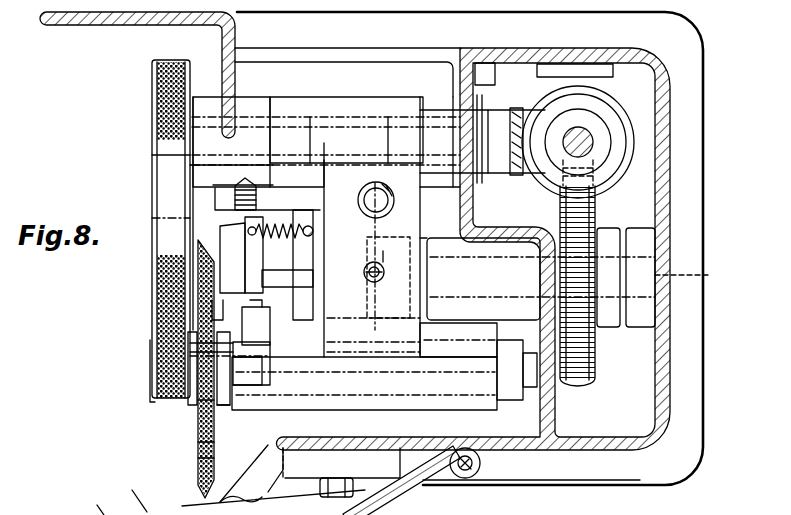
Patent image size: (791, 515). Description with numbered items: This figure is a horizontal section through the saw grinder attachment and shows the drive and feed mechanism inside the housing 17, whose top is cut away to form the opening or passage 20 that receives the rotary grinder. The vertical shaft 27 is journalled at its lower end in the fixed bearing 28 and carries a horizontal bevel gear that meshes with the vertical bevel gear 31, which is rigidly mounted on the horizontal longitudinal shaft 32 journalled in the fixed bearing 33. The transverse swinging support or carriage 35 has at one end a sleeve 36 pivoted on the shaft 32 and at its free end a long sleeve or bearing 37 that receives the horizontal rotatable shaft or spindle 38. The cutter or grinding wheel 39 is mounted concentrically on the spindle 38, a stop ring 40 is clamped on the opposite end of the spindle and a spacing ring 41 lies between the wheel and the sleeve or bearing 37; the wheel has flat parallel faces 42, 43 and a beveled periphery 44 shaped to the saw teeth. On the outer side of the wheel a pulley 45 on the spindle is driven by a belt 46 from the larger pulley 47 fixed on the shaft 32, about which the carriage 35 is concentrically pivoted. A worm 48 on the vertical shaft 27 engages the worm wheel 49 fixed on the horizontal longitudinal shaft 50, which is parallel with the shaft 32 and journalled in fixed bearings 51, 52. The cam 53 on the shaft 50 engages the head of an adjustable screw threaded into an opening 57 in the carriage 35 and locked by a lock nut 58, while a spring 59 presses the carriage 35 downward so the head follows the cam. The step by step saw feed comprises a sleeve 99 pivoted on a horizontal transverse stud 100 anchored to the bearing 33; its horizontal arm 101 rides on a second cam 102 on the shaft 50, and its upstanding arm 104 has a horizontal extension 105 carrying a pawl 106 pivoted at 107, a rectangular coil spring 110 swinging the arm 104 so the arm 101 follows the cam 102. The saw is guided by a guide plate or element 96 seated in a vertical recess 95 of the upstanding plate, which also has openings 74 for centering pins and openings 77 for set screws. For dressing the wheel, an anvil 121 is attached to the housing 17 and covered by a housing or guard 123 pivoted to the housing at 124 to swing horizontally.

The housing 17 is at (546, 61).
The opening or passage 20 is at (283, 441).
The vertical shaft 27 is at (582, 130).
The fixed bearing 28 is at (605, 77).
The vertical bevel gear 31 is at (513, 112).
The horizontal longitudinal shaft 32 is at (322, 140).
The fixed bearing 33 is at (248, 105).
The swinging support or carriage 35 is at (395, 218).
The sleeve 36 is at (297, 110).
The long sleeve or bearing 37 is at (398, 408).
The rotatable shaft or spindle 38 is at (514, 392).
The cutter or grinding wheel 39 is at (208, 425).
The stop ring 40 is at (530, 388).
The spacing ring 41 is at (222, 407).
The flat parallel face 42 is at (208, 442).
The flat parallel face 43 is at (208, 458).
The periphery 44 is at (206, 478).
The pulley 45 is at (150, 378).
The belt 46 is at (165, 257).
The larger pulley 47 is at (152, 99).
The worm 48 is at (578, 172).
The worm wheel 49 is at (582, 366).
The horizontal longitudinal shaft 50 is at (423, 262).
The fixed bearing 51 is at (640, 247).
The fixed bearing 52 is at (492, 275).
The cam 53 is at (367, 231).
The opening 57 is at (385, 255).
The lock nut 58 is at (364, 271).
The spring 59 is at (357, 192).
The openings 74 is at (105, 502).
The openings 77 is at (128, 493).
The vertical recess 95 is at (258, 502).
The guide plate or element 96 is at (260, 480).
The sleeve 99 is at (228, 225).
The stud 100 is at (262, 200).
The arm 101 is at (302, 281).
The cam 102 is at (302, 307).
The upstanding arm 104 is at (252, 262).
The horizontal extension 105 is at (264, 338).
The pawl 106 is at (222, 372).
The pivot 107 is at (255, 385).
The rectangular coil spring 110 is at (280, 240).
The anvil 121 is at (298, 470).
The housing or guard 123 is at (401, 480).
The pivot 124 is at (480, 465).